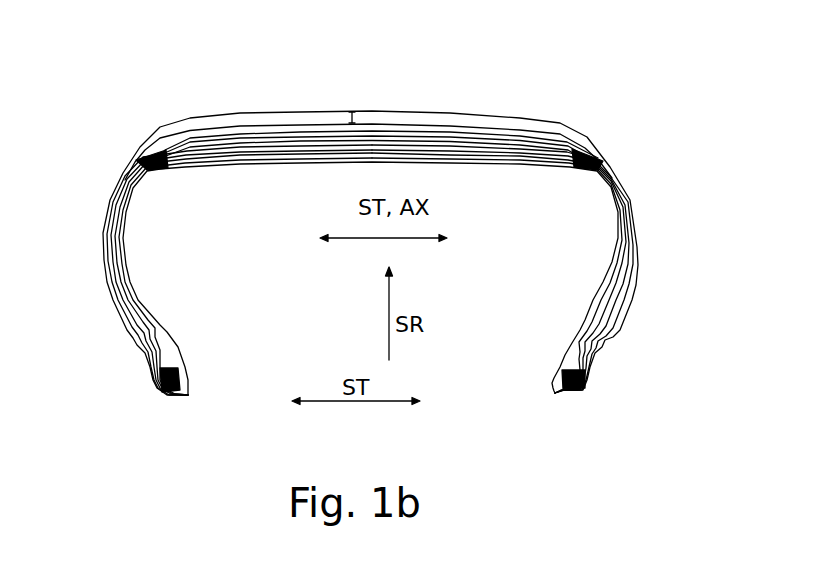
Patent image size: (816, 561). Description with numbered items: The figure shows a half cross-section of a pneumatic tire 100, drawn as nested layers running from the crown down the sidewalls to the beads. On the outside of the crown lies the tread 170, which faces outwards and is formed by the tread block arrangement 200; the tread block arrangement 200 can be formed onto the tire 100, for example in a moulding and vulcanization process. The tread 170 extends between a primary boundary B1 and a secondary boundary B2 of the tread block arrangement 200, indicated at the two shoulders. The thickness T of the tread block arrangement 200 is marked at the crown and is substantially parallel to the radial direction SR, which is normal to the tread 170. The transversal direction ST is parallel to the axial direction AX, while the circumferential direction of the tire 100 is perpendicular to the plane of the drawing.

The pneumatic tire 100 is at (625, 198).
The tread 170 is at (405, 92).
The tread block arrangement 200 is at (482, 113).
The primary boundary B1 is at (155, 120).
The secondary boundary B2 is at (602, 140).
The thickness T is at (347, 117).